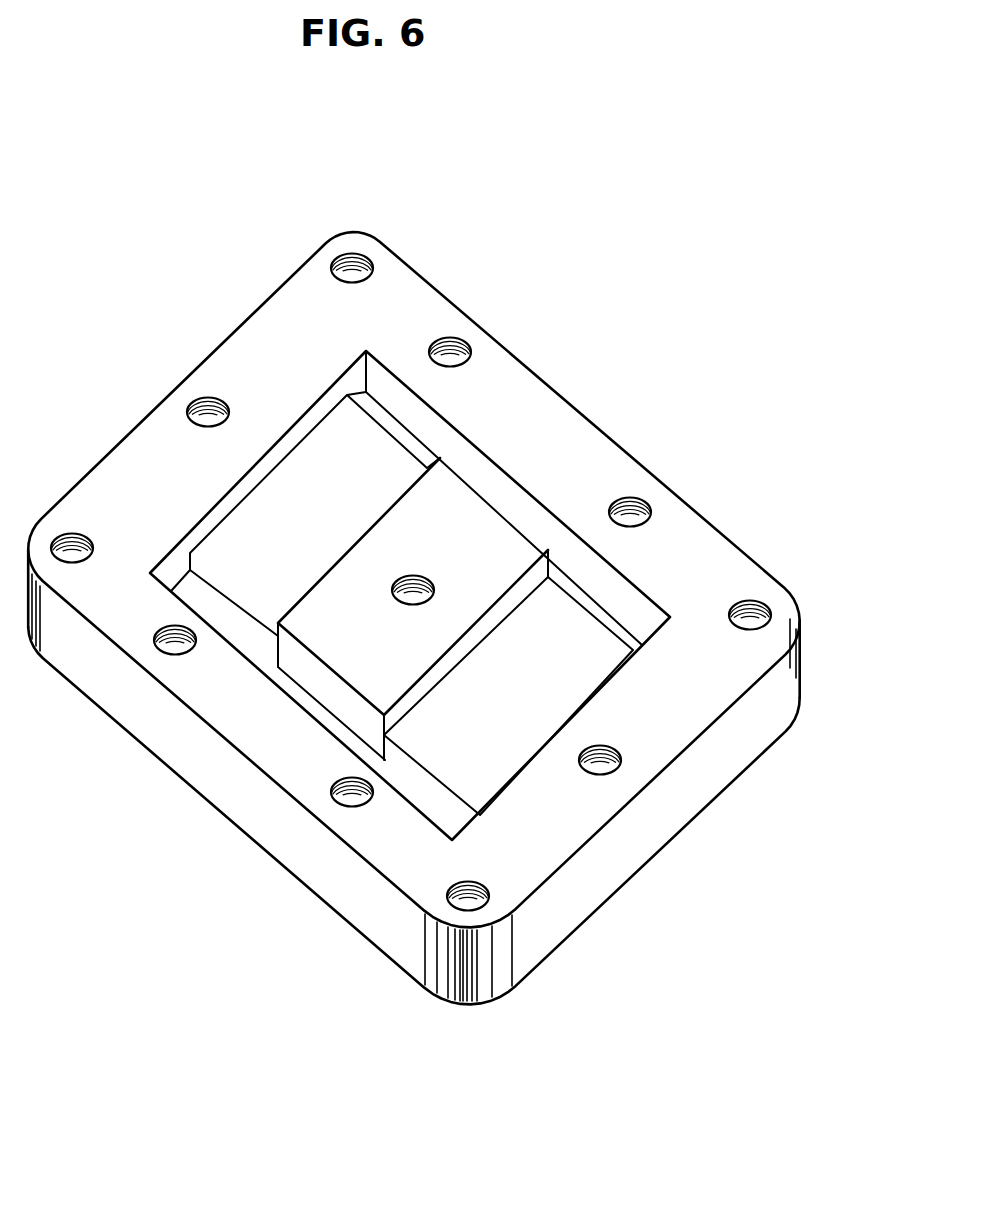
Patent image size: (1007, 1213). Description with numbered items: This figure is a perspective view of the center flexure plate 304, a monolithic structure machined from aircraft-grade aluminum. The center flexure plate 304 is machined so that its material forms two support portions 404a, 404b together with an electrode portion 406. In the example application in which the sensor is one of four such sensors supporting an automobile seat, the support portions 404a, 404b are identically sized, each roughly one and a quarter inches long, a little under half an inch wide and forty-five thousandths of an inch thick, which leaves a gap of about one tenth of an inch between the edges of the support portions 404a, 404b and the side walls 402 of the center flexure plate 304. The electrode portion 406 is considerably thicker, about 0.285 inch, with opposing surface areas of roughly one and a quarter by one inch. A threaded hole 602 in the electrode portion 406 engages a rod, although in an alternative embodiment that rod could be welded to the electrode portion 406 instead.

The center flexure plate 304 is at (800, 609).
The side walls 402 is at (233, 334).
The support portion 404a is at (227, 595).
The support portion 404b is at (427, 780).
The electrode portion 406 is at (389, 609).
The threaded hole 602 is at (414, 582).